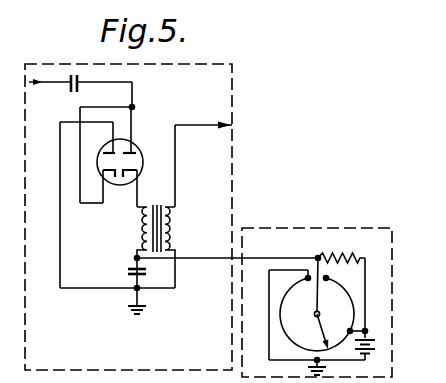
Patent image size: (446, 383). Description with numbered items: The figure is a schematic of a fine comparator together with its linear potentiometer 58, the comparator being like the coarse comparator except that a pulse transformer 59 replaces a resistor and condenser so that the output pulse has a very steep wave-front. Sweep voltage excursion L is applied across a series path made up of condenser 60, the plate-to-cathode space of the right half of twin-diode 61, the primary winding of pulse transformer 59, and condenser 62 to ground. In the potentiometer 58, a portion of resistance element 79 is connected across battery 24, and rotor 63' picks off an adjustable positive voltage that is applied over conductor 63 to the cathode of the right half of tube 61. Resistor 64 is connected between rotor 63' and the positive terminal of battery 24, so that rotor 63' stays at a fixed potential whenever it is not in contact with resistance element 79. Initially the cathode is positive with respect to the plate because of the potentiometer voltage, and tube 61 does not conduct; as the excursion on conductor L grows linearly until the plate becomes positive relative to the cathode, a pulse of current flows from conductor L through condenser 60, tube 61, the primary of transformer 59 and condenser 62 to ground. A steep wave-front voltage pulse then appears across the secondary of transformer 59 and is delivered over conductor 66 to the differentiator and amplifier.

The voltage excursion L is at (53, 88).
The condenser 60 is at (88, 78).
The twin-diode 61 is at (138, 145).
The conductor 66 is at (202, 123).
The pulse transformer 59 is at (159, 203).
The condenser 62 is at (125, 273).
The conductor 63 is at (227, 280).
The linear potentiometer 58 is at (332, 228).
The resistor 64 is at (354, 250).
The rotor 63' is at (309, 303).
The resistance element 79 is at (283, 325).
The battery 24 is at (369, 333).